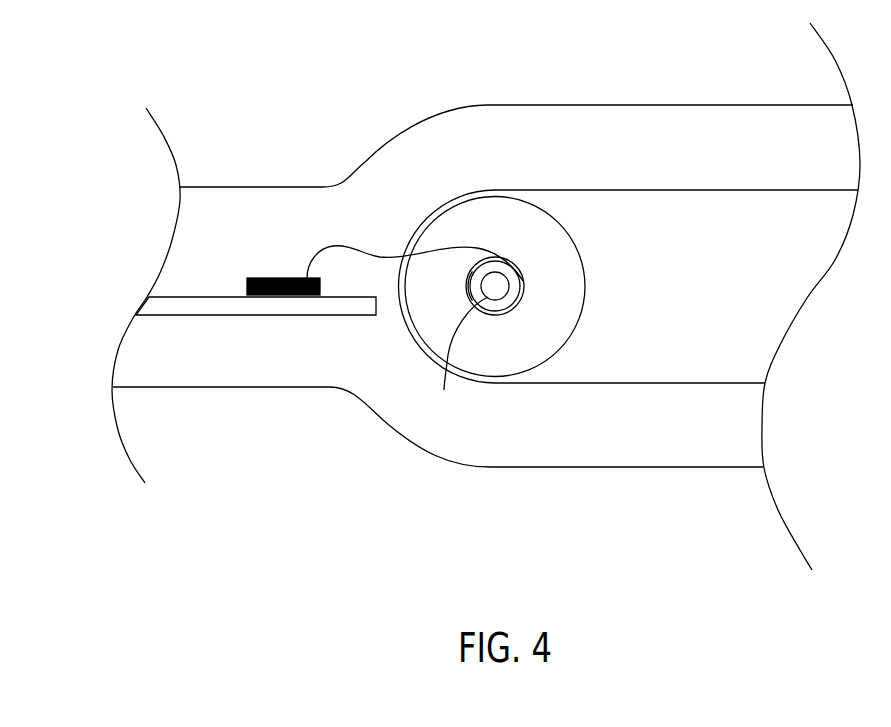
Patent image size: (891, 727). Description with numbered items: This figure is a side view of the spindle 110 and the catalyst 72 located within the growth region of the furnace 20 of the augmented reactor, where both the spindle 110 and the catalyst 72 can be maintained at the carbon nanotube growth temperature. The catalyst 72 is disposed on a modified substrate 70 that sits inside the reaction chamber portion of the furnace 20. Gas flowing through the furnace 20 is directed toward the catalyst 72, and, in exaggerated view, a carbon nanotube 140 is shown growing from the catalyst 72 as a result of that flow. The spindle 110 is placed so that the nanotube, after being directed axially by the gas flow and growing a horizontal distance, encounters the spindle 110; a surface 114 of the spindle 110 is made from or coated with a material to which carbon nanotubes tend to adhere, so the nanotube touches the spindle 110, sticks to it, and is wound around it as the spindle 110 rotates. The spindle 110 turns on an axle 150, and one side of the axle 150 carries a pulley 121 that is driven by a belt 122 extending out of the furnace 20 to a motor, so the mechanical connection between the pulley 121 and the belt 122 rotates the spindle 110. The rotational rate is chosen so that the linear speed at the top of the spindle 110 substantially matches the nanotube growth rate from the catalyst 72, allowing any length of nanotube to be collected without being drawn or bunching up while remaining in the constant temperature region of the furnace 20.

The furnace 20 is at (383, 430).
The substrate 70 is at (207, 315).
The catalyst 72 is at (320, 288).
The spindle 110 is at (522, 285).
The surface 114 is at (513, 307).
The pulley 121 is at (585, 312).
The belt 122 is at (726, 190).
The carbon nanotube 140 is at (390, 255).
The axle 150 is at (457, 359).